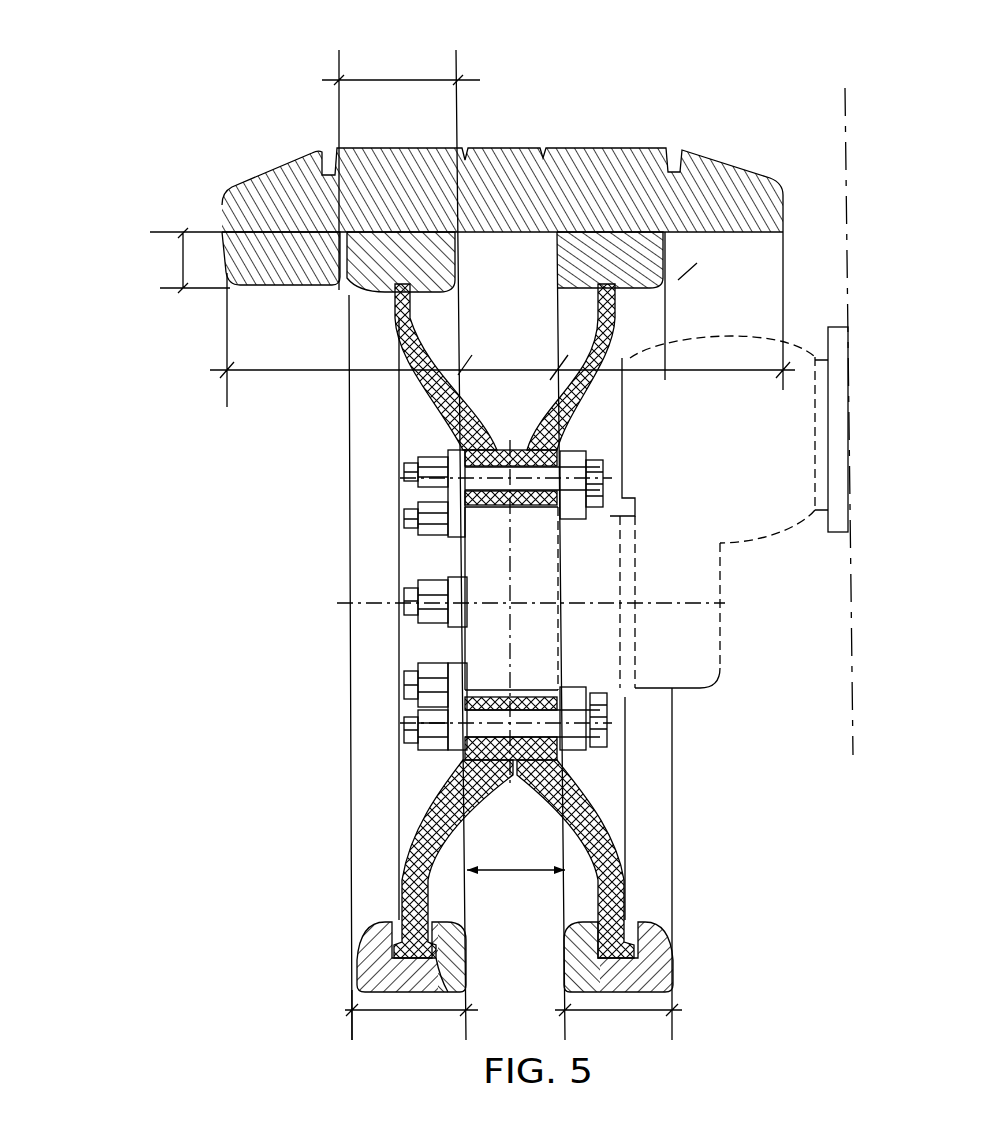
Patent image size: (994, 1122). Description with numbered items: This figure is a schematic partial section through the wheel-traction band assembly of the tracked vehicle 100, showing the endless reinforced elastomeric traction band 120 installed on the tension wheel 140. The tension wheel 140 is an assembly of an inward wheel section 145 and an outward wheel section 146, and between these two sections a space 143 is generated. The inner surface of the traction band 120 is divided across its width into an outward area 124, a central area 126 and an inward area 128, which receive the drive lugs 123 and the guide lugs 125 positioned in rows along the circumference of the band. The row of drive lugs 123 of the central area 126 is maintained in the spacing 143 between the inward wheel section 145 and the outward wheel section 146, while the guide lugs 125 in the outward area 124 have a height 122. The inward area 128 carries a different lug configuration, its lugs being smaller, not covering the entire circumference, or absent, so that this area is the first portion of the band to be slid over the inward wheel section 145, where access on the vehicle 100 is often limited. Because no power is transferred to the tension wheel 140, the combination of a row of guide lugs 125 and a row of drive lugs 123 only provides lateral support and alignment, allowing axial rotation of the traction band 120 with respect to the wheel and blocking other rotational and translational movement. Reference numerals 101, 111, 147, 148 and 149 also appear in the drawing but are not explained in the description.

The vehicle 100 is at (838, 125).
The wheel frame 101 is at (692, 273).
The tire tread 111 is at (607, 135).
The traction band 120 is at (262, 212).
The height 122 is at (178, 262).
The drive lugs 123 is at (520, 292).
The outward area 124 is at (318, 377).
The guide lugs 125 is at (308, 290).
The central area 126 is at (472, 378).
The inward area 128 is at (675, 377).
The tension wheel 140 is at (682, 948).
The space 143 is at (488, 873).
The inward wheel section 145 is at (677, 802).
The outward wheel section 146 is at (347, 821).
The right pad width 147 is at (583, 1012).
The left pad width 148 is at (436, 1013).
The tread segment width 149 is at (372, 76).